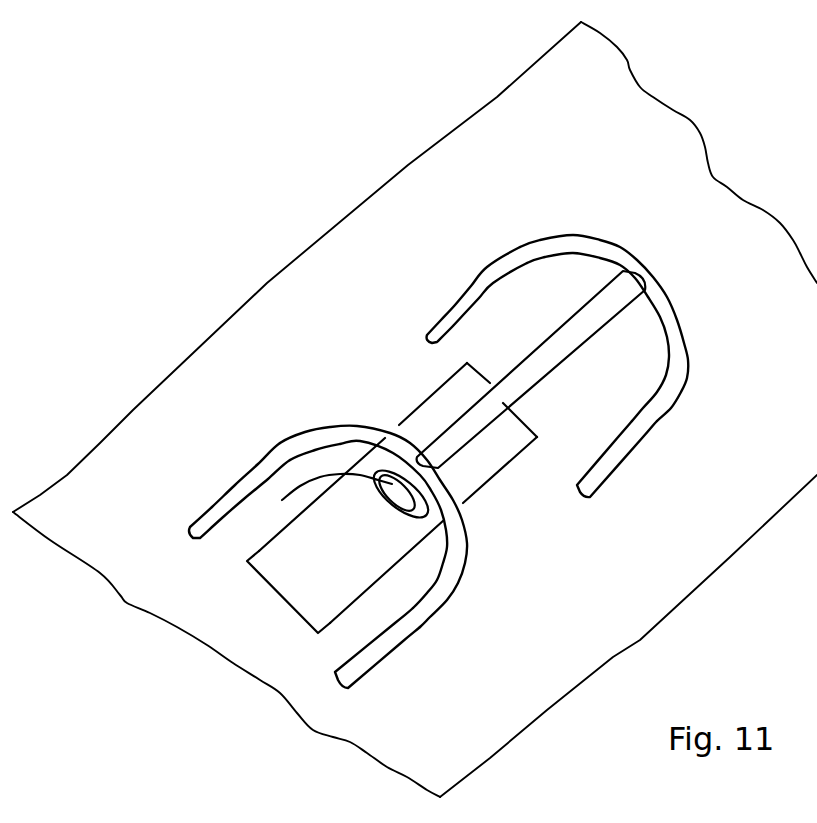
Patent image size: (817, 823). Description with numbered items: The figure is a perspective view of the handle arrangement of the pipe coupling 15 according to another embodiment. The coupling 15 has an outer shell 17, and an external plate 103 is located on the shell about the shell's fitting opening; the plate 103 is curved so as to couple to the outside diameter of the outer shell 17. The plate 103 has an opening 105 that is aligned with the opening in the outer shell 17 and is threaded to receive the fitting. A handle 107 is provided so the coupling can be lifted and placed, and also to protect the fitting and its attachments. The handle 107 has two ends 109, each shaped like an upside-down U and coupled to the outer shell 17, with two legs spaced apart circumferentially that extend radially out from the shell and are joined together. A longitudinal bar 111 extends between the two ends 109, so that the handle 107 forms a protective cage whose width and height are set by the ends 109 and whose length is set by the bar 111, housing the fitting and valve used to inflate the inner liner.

The pipe coupling 15 is at (267, 283).
The outer shell 17 is at (195, 360).
The external plate 103 is at (420, 403).
The opening 105 is at (290, 498).
The handle 107 is at (573, 193).
The handle ends 109 is at (487, 265).
The longitudinal bar 111 is at (555, 350).